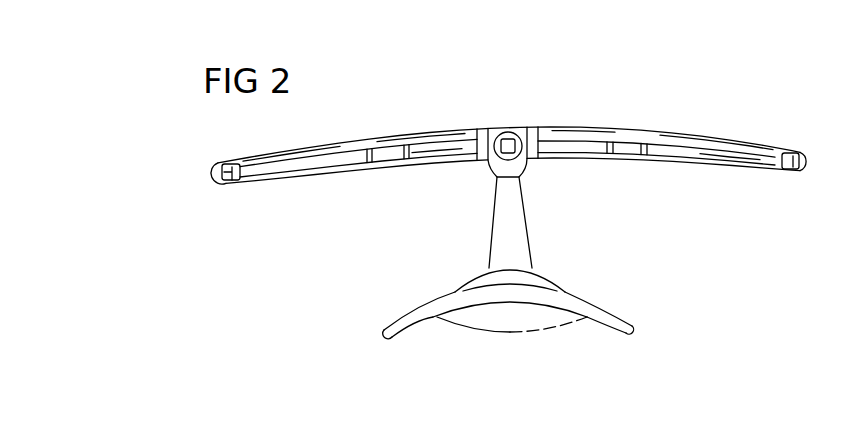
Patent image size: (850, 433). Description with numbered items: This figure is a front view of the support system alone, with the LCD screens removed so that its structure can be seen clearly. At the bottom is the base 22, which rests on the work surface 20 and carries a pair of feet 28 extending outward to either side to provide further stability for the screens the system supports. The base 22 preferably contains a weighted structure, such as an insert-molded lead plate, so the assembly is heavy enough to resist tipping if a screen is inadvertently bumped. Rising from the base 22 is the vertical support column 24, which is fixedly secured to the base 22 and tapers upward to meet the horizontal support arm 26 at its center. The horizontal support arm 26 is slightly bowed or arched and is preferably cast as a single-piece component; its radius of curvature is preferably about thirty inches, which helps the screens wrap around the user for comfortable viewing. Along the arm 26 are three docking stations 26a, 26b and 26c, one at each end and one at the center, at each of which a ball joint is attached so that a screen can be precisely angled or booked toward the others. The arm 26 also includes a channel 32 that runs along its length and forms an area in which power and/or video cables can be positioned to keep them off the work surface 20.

The work surface 20 is at (289, 319).
The base 22 is at (526, 330).
The vertical support column 24 is at (480, 244).
The horizontal support arm 26 is at (425, 166).
The docking station 26a is at (786, 153).
The docking station 26b is at (508, 141).
The docking station 26c is at (215, 168).
The feet 28 is at (385, 333).
The channel 32 is at (283, 181).